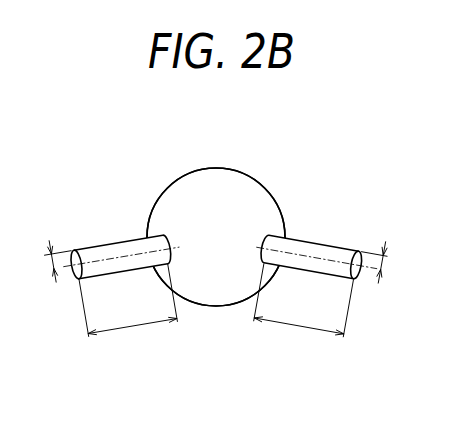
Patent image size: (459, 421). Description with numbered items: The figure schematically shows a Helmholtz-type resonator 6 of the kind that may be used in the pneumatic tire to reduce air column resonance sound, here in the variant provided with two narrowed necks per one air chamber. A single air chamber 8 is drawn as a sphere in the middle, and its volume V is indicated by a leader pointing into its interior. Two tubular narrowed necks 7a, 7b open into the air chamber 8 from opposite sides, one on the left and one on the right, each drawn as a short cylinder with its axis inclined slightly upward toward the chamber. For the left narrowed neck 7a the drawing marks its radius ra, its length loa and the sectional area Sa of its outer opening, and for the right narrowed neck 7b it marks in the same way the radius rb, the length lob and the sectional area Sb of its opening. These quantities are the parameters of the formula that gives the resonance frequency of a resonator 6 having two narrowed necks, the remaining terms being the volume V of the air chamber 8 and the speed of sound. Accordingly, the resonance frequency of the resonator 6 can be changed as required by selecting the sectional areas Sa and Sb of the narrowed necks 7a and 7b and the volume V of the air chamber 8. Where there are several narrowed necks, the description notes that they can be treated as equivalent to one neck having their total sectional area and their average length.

The resonator 6 is at (291, 126).
The narrowed neck 7a is at (105, 244).
The narrowed neck 7b is at (312, 243).
The air chamber 8 is at (226, 184).
The volume of the air chamber V is at (216, 278).
The sectional area of the narrowed neck Sa is at (70, 275).
The sectional area of the narrowed neck Sb is at (358, 278).
The radius of the narrowed neck ra is at (52, 260).
The radius of the narrowed neck rb is at (382, 261).
The length of the narrowed neck loa is at (128, 300).
The length of the narrowed neck lob is at (304, 300).